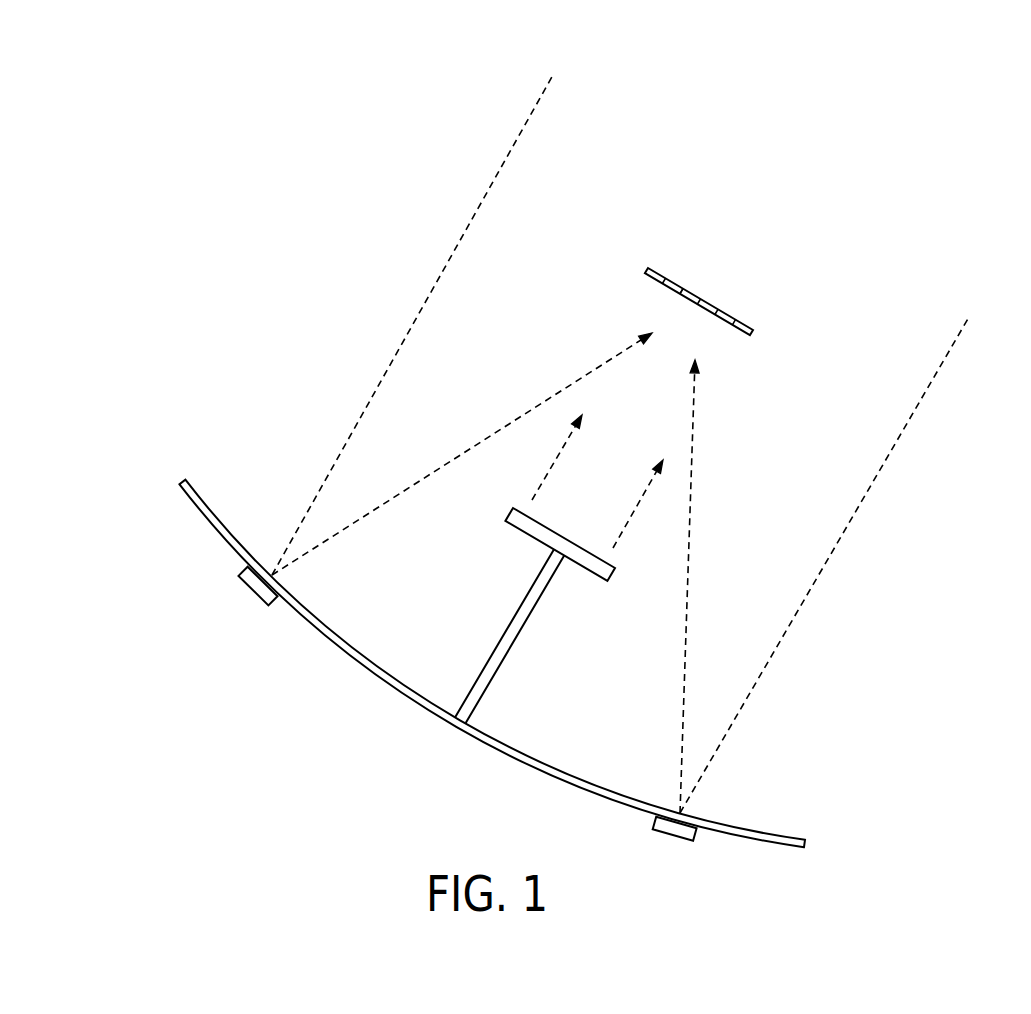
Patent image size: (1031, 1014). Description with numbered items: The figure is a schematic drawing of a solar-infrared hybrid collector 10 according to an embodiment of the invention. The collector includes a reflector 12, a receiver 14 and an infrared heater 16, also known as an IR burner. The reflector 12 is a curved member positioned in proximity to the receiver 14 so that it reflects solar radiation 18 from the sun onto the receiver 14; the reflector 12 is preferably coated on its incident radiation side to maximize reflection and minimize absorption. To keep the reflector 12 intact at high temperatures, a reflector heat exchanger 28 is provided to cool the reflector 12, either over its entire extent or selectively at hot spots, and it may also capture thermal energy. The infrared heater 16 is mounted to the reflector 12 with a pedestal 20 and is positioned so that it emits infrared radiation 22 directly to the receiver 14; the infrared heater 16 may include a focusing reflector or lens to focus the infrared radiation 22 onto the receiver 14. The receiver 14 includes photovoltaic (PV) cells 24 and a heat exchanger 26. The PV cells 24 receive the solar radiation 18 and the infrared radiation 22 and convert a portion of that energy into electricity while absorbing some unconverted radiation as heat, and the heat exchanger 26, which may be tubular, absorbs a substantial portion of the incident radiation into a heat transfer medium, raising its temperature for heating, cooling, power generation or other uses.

The solar-infrared hybrid collector 10 is at (856, 257).
The reflector 12 is at (758, 832).
The receiver 14 is at (747, 316).
The infrared heater 16 is at (520, 523).
The solar radiation 18 is at (822, 577).
The pedestal 20 is at (508, 652).
The infrared radiation 22 is at (637, 502).
The photovoltaic (PV) cells 24 is at (655, 263).
The heat exchanger 26 is at (694, 289).
The reflector heat exchanger 28 is at (260, 590).